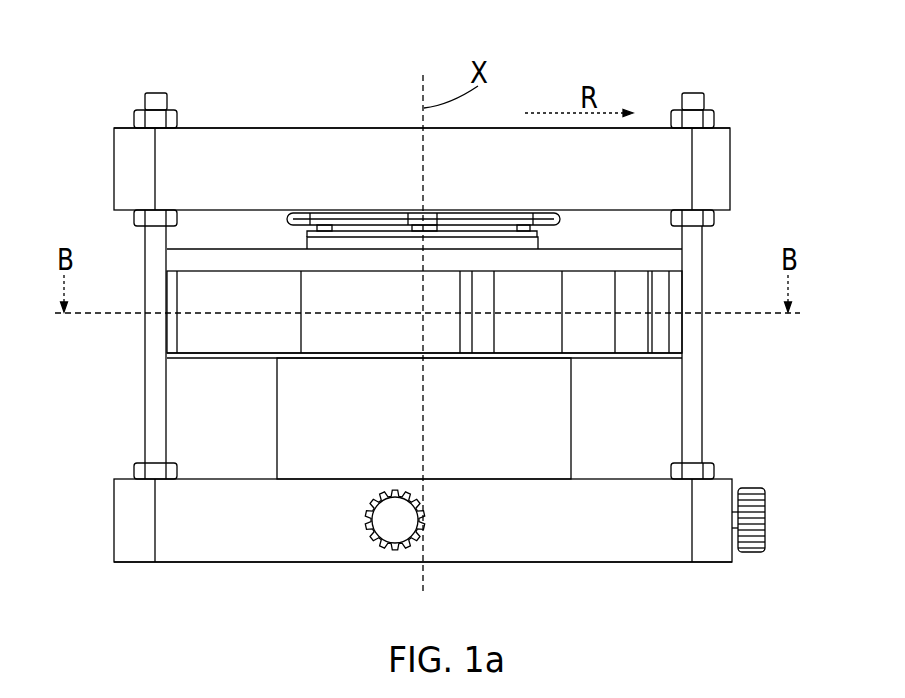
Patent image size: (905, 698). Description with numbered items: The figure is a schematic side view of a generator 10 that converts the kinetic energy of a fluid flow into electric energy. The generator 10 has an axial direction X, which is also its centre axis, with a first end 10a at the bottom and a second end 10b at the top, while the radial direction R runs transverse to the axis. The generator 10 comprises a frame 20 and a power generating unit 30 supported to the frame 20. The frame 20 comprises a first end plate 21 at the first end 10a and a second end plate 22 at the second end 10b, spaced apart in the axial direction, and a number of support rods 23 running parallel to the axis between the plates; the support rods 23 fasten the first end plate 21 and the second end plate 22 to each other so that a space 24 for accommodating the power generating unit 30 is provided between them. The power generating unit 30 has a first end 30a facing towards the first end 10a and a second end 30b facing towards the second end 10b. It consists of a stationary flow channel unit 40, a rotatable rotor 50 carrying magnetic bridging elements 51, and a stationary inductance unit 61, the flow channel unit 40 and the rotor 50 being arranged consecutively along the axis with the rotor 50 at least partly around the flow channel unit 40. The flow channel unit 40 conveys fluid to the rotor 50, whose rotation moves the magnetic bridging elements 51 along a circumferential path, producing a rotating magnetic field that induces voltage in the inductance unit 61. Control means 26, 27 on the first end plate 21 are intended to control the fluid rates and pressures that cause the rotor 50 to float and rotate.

The generator 10 is at (118, 52).
The first end 10a is at (382, 577).
The second end 10b is at (340, 112).
The frame 20 is at (119, 243).
The first end plate 21 is at (660, 534).
The second end plate 22 is at (660, 184).
The support rods 23 is at (148, 108).
The space 24 is at (655, 421).
The control means 26 is at (385, 515).
The control means 27 is at (755, 520).
The power generating unit 30 is at (192, 415).
The first end 30a is at (460, 490).
The second end 30b is at (457, 196).
The flow channel unit 40 is at (515, 439).
The rotor 50 is at (175, 330).
The magnetic bridging element 51 is at (535, 233).
The inductance unit 61 is at (352, 205).